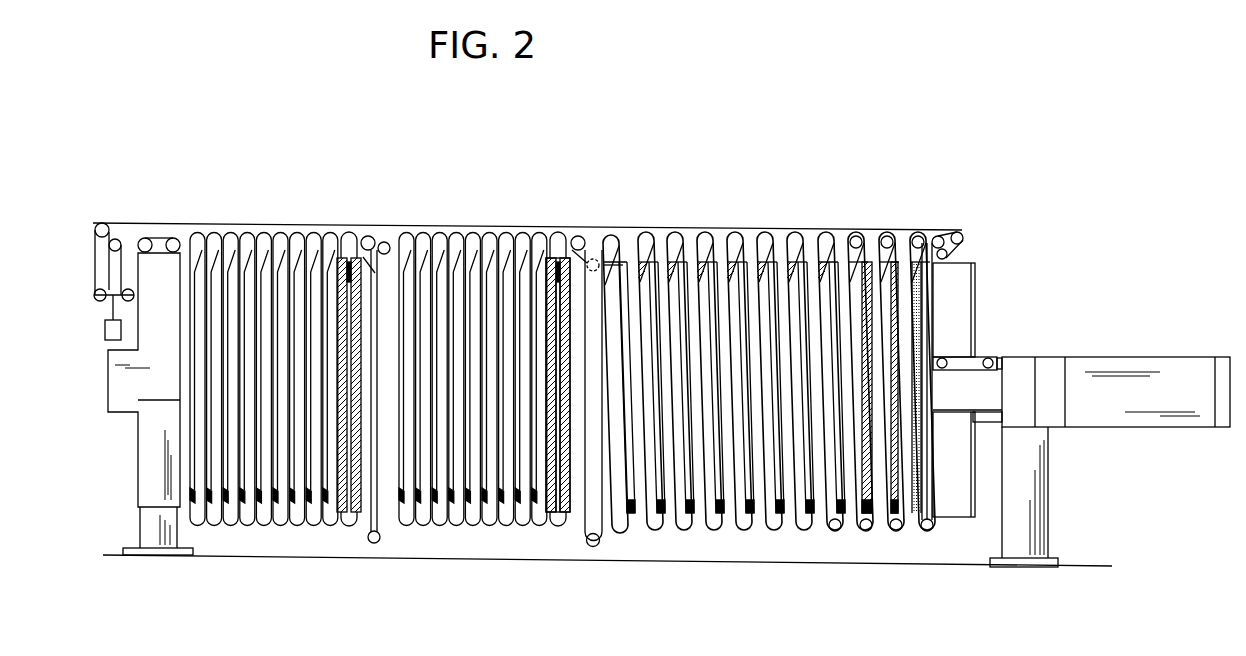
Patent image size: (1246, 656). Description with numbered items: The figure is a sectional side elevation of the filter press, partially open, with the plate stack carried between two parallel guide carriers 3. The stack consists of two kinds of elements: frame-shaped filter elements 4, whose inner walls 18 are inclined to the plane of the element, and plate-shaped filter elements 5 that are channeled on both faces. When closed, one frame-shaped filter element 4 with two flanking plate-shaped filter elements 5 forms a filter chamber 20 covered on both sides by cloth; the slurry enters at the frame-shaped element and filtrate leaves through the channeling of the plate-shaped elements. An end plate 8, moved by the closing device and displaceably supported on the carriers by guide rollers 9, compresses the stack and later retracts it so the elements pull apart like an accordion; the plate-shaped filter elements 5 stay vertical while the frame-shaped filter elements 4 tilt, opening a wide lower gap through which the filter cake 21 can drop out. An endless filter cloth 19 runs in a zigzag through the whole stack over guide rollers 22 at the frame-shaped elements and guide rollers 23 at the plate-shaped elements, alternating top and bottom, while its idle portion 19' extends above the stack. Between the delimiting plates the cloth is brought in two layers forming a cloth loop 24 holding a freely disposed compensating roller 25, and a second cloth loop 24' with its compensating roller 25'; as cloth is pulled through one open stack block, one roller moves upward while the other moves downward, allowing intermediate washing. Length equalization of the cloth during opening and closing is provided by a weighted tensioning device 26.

The guide carrier 3 is at (1030, 403).
The frame-shaped filter element 4 is at (914, 276).
The plate-shaped filter element 5 is at (897, 311).
The end plate 8 is at (968, 327).
The guide roller 9 is at (988, 369).
The inner wall 18 is at (913, 513).
The filter cloth 19 is at (842, 359).
The idle portion 19' is at (527, 192).
The filter chamber 20 is at (546, 258).
The filter cake 21 is at (917, 480).
The guide roller 22 is at (917, 236).
The guide roller 23 is at (838, 532).
The cloth loop 24 is at (627, 421).
The cloth loop 24' is at (404, 422).
The compensating roller 25 is at (601, 402).
The compensating roller 25' is at (373, 428).
The tensioning device 26 is at (108, 316).